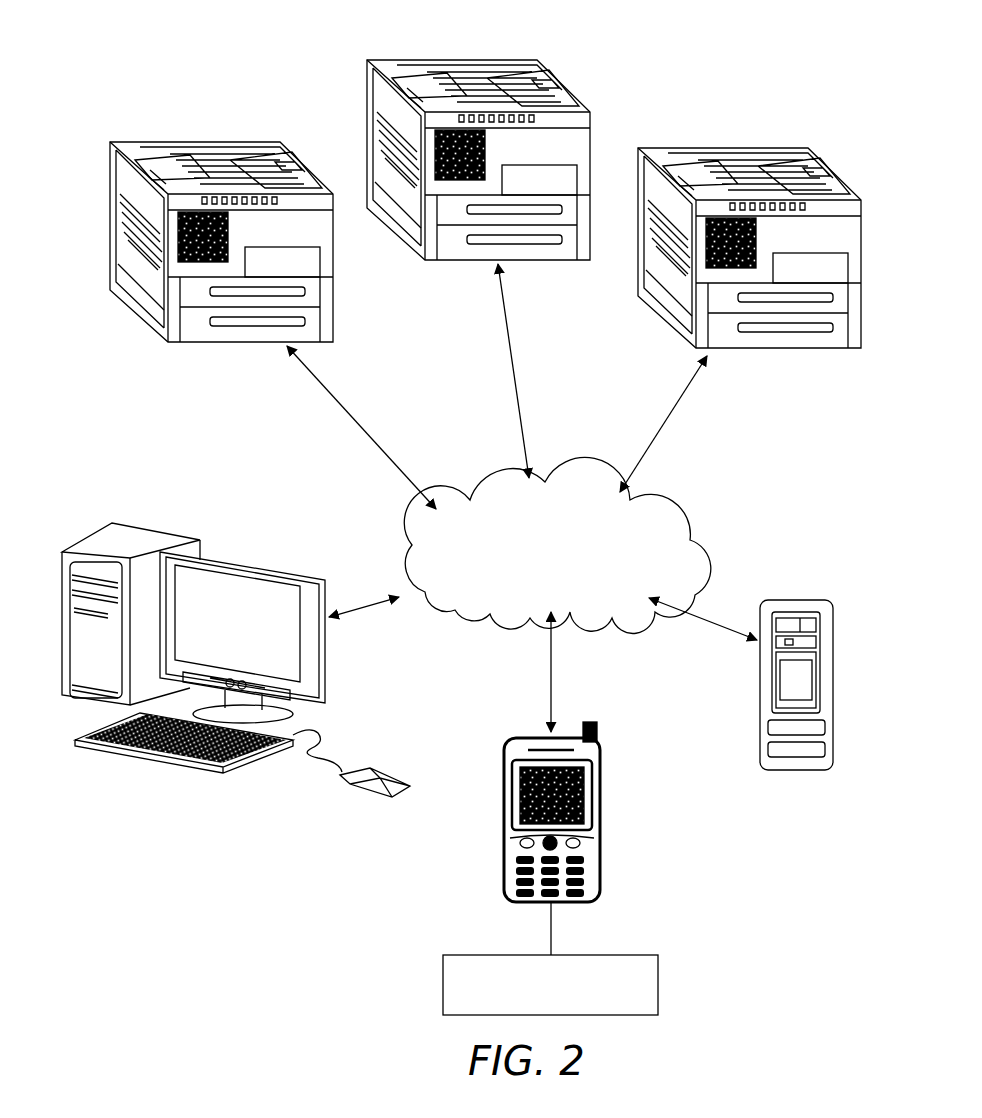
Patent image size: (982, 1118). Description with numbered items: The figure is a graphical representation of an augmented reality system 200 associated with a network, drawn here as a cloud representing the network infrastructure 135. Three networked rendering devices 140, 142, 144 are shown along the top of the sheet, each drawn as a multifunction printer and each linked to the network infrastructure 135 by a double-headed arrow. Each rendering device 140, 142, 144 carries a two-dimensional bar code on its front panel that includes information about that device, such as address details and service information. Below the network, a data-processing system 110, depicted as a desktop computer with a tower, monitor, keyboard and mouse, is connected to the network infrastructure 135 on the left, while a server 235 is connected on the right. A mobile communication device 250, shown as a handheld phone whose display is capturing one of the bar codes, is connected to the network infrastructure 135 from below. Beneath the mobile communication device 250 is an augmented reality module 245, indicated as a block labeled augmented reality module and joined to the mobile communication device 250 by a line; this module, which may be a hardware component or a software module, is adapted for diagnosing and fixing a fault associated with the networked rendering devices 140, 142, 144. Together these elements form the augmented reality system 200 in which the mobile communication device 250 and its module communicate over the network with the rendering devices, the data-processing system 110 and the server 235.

The augmented reality system 200 is at (752, 82).
The networked rendering device 140 is at (478, 139).
The networked rendering device 142 is at (221, 219).
The networked rendering device 144 is at (749, 234).
The network infrastructure 135 is at (685, 514).
The data-processing system 110 is at (268, 598).
The server 235 is at (806, 600).
The mobile communication device 250 is at (603, 780).
The augmented reality module 245 is at (632, 955).